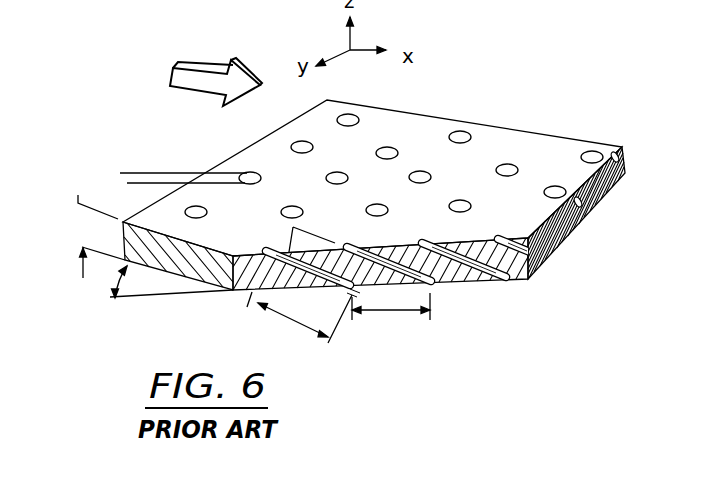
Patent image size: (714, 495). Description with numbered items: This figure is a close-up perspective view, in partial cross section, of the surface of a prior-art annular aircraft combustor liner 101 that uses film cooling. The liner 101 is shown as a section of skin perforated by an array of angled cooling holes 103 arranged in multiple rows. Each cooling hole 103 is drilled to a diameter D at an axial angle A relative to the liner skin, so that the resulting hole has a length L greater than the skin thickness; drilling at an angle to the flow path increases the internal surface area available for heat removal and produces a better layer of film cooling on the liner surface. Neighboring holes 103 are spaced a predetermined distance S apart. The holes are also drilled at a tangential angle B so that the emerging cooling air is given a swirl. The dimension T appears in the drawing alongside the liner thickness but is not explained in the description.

The liner 101 is at (423, 138).
The angled cooling holes 103 is at (390, 208).
The diameter D is at (147, 197).
The plate thickness T is at (78, 197).
The tangential angle B is at (118, 279).
The axial angle A is at (290, 240).
The length L is at (330, 340).
The distance S is at (430, 310).